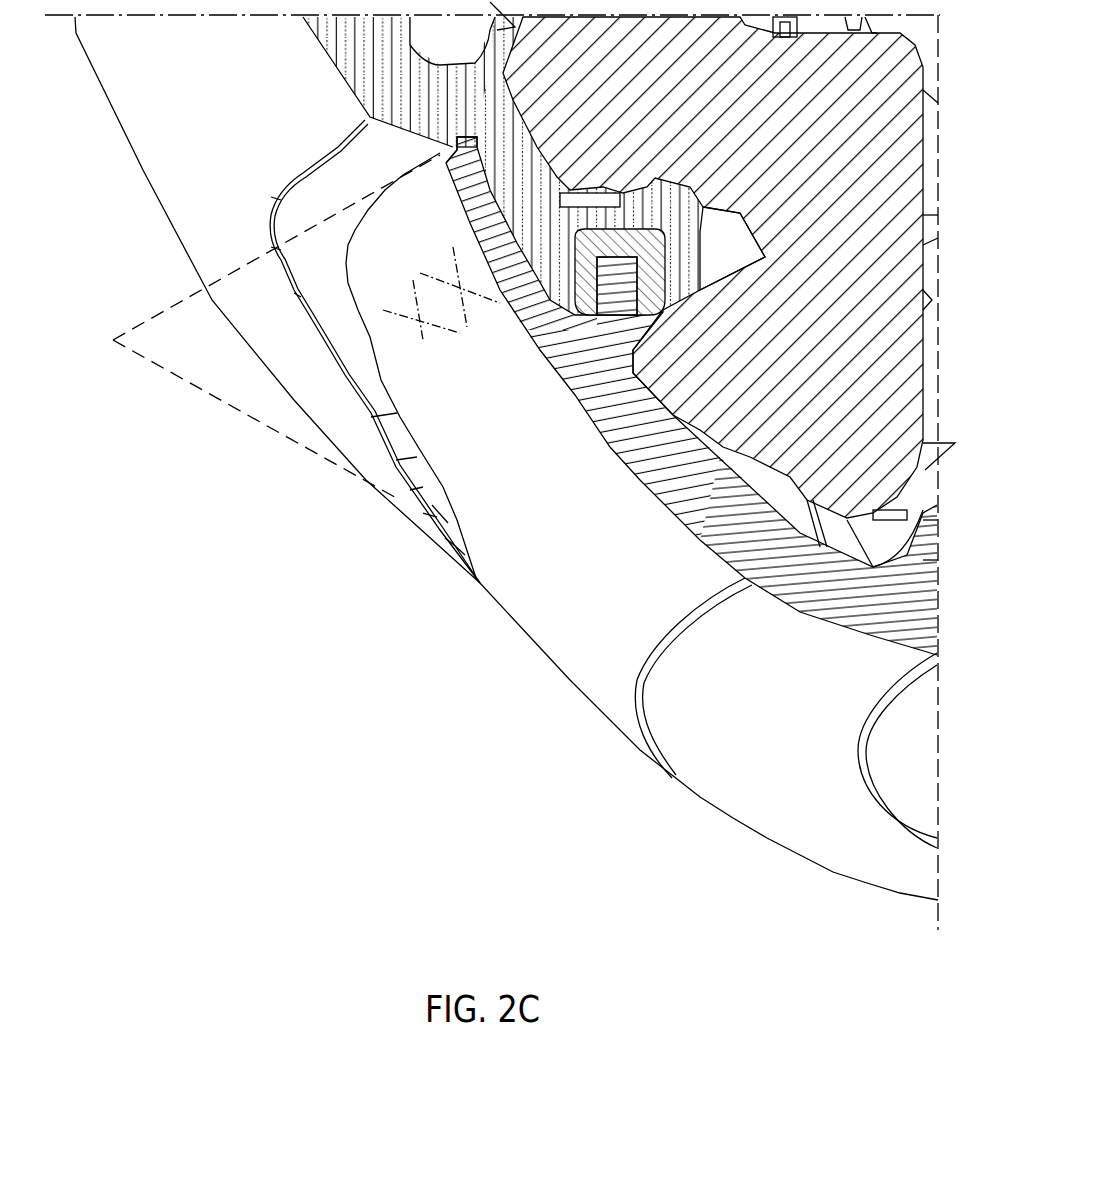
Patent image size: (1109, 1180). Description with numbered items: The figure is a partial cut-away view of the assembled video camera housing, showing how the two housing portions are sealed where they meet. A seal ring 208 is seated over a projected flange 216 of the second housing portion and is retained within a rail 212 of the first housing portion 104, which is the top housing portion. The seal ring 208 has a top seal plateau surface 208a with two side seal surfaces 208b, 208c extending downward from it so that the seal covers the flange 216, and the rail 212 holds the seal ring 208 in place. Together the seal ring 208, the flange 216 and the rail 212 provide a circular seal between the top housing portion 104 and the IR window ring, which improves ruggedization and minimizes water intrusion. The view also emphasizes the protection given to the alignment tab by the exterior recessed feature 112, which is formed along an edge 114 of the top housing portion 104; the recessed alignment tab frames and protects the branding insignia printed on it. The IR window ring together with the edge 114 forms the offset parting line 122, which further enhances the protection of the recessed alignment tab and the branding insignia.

The first housing portion 104 is at (148, 175).
The exterior recessed feature 112 is at (322, 172).
The edge 114 is at (423, 487).
The offset parting line 122 is at (244, 327).
The seal ring 208 is at (552, 325).
The top seal plateau surface 208a is at (670, 193).
The side seal surface 208b is at (473, 221).
The side seal surface 208c is at (710, 230).
The rail 212 is at (597, 195).
The projected flange 216 is at (643, 323).